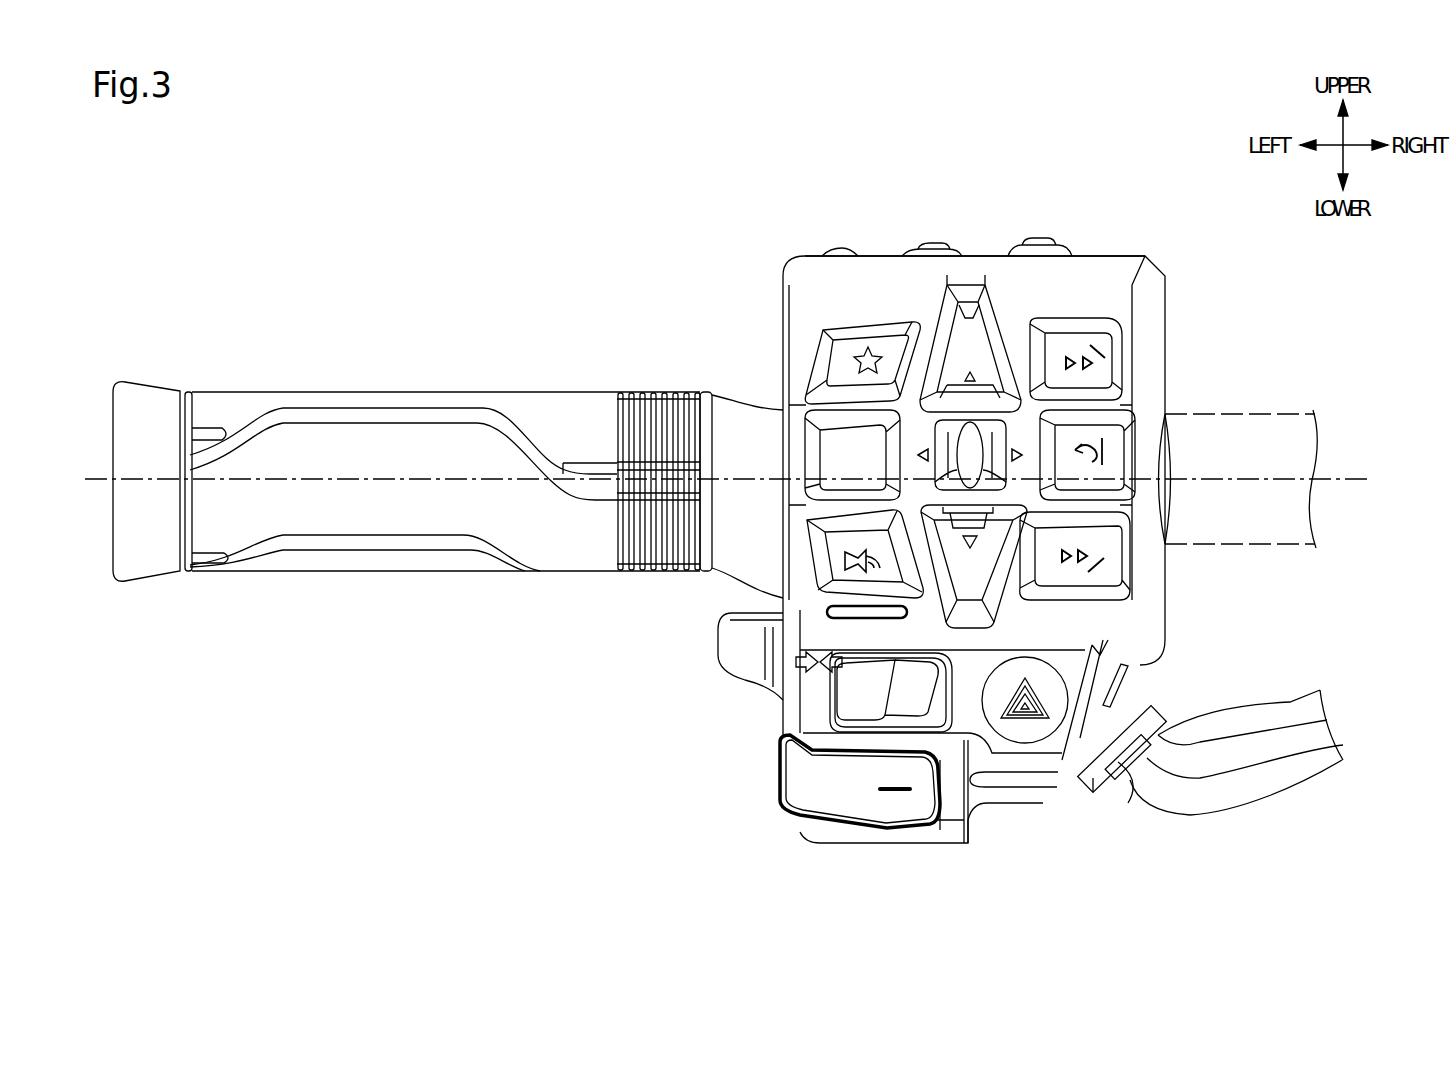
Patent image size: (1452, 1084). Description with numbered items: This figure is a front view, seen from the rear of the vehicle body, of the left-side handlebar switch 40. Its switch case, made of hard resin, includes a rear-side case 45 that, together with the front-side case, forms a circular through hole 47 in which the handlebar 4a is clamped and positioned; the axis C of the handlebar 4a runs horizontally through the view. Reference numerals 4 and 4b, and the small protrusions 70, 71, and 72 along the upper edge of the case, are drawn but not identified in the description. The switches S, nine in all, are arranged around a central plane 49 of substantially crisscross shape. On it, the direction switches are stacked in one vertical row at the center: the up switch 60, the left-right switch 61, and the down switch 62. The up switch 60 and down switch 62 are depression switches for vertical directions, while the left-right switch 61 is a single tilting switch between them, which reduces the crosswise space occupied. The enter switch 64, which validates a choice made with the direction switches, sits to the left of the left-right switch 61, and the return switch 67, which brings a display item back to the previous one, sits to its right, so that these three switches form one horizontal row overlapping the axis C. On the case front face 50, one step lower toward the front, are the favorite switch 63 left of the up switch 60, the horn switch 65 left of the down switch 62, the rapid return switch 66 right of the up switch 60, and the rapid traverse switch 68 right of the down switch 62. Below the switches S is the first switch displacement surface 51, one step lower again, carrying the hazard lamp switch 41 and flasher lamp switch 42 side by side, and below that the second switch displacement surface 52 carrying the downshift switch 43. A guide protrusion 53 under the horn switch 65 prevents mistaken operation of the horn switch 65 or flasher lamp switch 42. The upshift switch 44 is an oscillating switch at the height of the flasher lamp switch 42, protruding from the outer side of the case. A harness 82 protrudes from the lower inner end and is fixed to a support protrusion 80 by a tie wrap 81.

The grip 4 is at (388, 450).
The grip rubber portion 4b is at (540, 410).
The handlebar 4a is at (1262, 547).
The handlebar switch 40 is at (1120, 256).
The hazard lamp switch 41 is at (1025, 740).
The flasher lamp switch 42 is at (860, 692).
The downshift switch 43 is at (840, 805).
The upshift switch 44 is at (755, 650).
The rear-side case 45 is at (1085, 278).
The circular through hole 47 is at (1168, 462).
The central plane 49 is at (913, 407).
The case front face 50 is at (1045, 620).
The first switch displacement surface 51 is at (970, 800).
The second switch displacement surface 52 is at (950, 795).
The guide protrusion 53 is at (850, 612).
The up switch 60 is at (970, 332).
The left-right switch 61 is at (988, 452).
The down switch 62 is at (975, 580).
The favorite switch 63 is at (840, 352).
The enter switch 64 is at (835, 445).
The horn switch 65 is at (835, 548).
The rapid return switch 66 is at (1085, 330).
The return switch 67 is at (1092, 440).
The rapid traverse switch 68 is at (1110, 535).
The first protrusion 70 is at (838, 248).
The second protrusion 71 is at (932, 246).
The third protrusion 72 is at (1040, 250).
The support protrusion 80 is at (1133, 795).
The tie wrap 81 is at (1093, 780).
The harness 82 is at (1243, 785).
The switches S is at (922, 311).
The axis C is at (1342, 490).